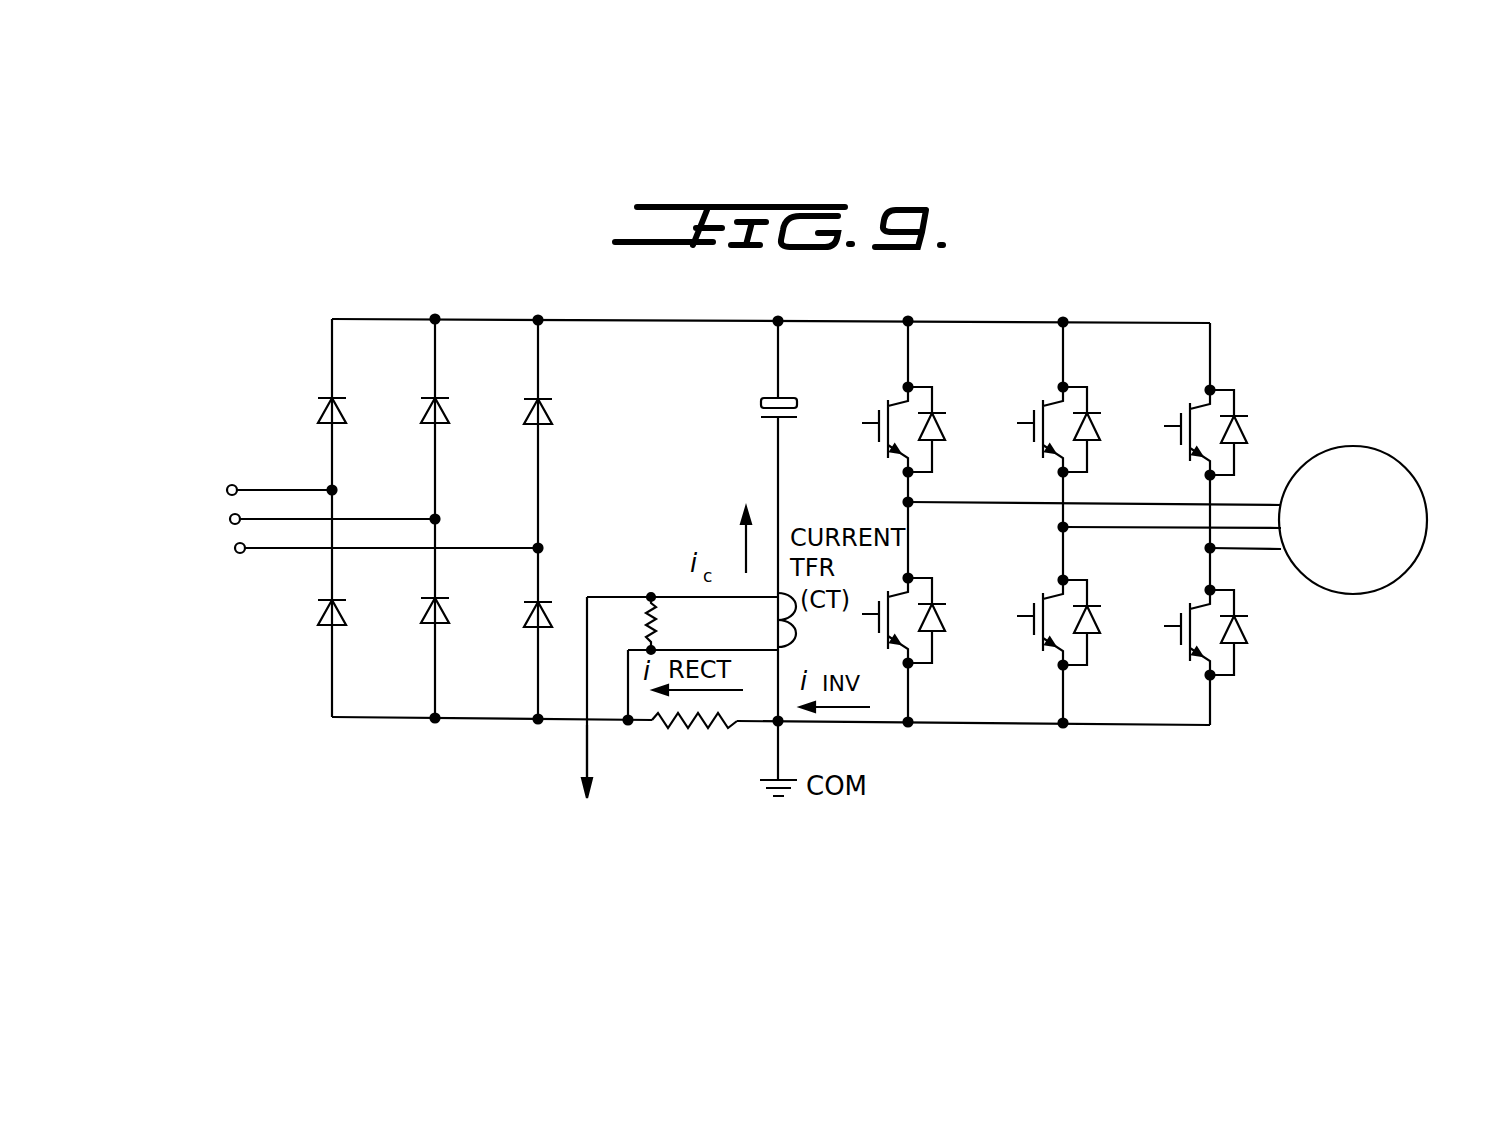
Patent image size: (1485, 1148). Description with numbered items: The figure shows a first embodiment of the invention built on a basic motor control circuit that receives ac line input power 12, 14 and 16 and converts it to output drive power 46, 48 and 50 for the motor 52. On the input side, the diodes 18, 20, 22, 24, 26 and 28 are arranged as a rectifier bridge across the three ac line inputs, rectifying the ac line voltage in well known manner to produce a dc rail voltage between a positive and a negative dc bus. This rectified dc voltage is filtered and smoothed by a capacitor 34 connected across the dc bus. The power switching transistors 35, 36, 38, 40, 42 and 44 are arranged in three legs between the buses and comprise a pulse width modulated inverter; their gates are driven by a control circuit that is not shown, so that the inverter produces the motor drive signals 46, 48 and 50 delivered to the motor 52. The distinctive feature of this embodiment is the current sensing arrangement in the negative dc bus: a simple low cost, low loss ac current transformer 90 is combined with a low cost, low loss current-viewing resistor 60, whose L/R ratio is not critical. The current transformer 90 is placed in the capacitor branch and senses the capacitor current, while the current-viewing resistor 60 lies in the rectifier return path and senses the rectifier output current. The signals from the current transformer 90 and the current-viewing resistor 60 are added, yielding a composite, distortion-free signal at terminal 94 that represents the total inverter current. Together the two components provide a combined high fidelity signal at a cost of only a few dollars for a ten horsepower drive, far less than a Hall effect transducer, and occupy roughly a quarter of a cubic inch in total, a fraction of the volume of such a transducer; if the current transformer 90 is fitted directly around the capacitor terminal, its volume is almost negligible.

The ac line input power 12 is at (236, 550).
The ac line input power 14 is at (230, 518).
The ac line input power 16 is at (238, 478).
The diode 18 is at (448, 420).
The diode 20 is at (420, 613).
The diode 22 is at (550, 417).
The diode 24 is at (527, 617).
The diode 26 is at (348, 420).
The diode 28 is at (318, 612).
The capacitor 34 is at (758, 400).
The power switching transistor 35 is at (920, 412).
The power switching transistor 36 is at (912, 640).
The power switching transistor 38 is at (1072, 415).
The power switching transistor 40 is at (1070, 645).
The power switching transistor 42 is at (1218, 410).
The power switching transistor 44 is at (1220, 650).
The output drive power 46 is at (1240, 505).
The output drive power 48 is at (1252, 528).
The output drive power 50 is at (1240, 550).
The motor 52 is at (1428, 517).
The current-viewing resistor 60 is at (689, 724).
The ac current transformer 90 is at (778, 622).
The terminal 94 is at (583, 742).